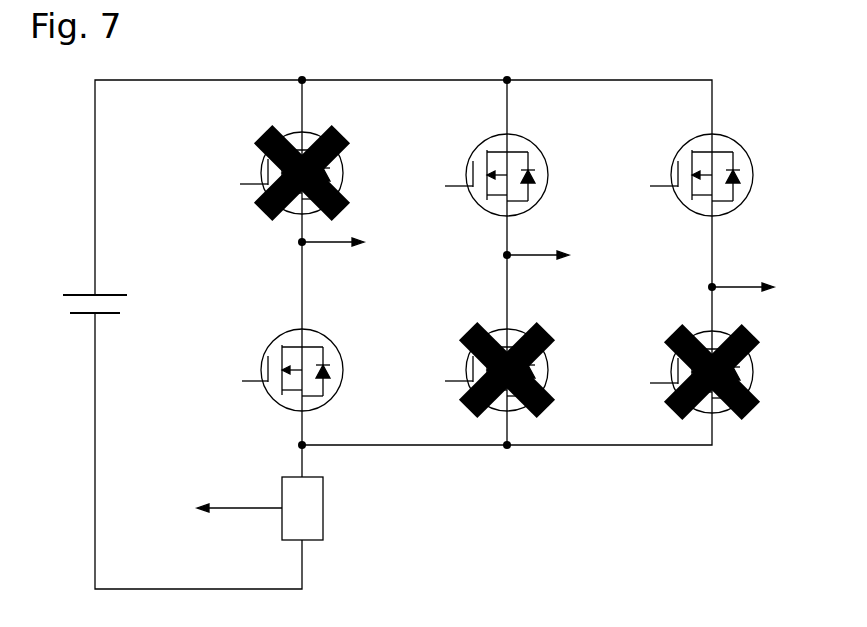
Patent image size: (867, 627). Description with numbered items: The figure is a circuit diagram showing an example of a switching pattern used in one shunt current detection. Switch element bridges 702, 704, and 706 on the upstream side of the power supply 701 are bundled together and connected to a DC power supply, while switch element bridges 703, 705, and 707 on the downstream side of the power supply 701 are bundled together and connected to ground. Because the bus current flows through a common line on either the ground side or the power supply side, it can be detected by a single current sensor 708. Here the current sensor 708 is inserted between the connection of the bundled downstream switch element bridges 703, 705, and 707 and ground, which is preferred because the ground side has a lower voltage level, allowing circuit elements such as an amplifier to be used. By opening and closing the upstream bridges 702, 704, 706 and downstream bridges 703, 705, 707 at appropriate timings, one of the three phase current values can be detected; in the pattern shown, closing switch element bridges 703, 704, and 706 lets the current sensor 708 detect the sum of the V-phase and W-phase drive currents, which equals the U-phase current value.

The power supply 701 is at (118, 293).
The switch element bridge 702 is at (312, 132).
The switch element bridge 703 is at (328, 330).
The switch element bridge 704 is at (520, 135).
The switch element bridge 705 is at (520, 327).
The switch element bridge 706 is at (723, 132).
The switch element bridge 707 is at (733, 328).
The current sensor 708 is at (324, 495).